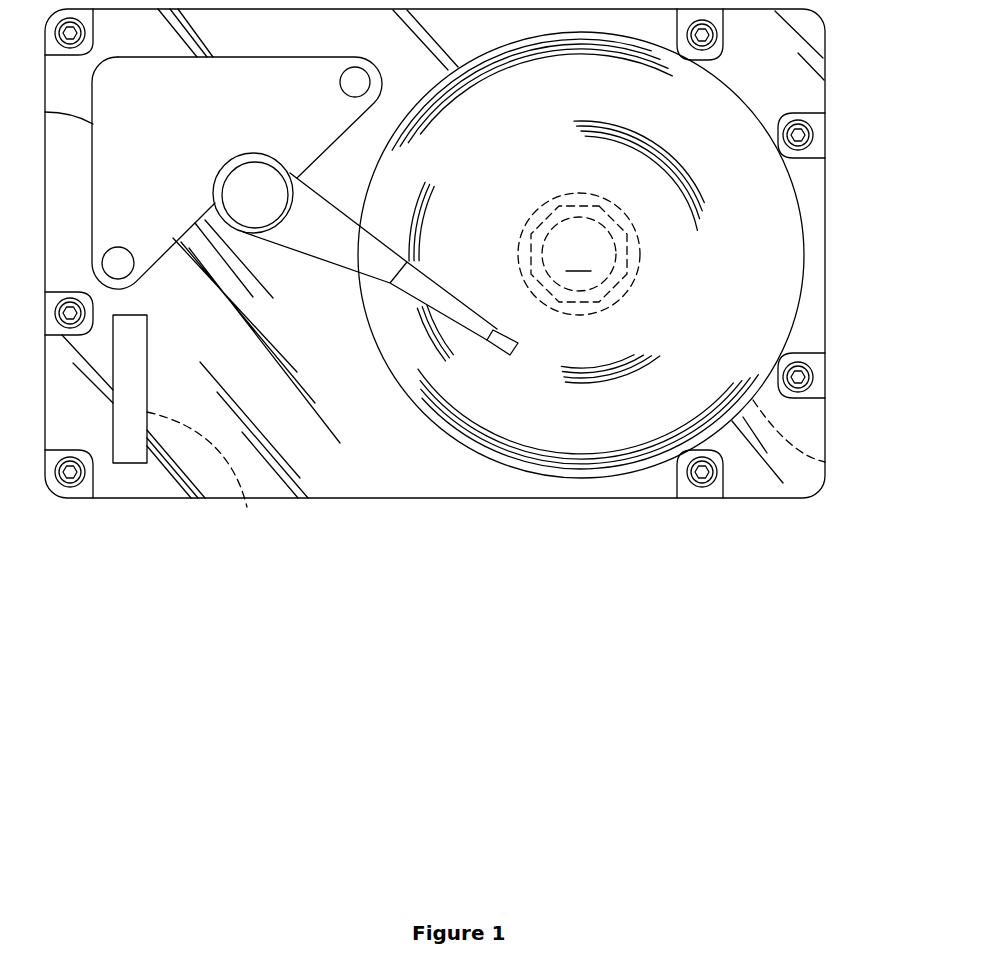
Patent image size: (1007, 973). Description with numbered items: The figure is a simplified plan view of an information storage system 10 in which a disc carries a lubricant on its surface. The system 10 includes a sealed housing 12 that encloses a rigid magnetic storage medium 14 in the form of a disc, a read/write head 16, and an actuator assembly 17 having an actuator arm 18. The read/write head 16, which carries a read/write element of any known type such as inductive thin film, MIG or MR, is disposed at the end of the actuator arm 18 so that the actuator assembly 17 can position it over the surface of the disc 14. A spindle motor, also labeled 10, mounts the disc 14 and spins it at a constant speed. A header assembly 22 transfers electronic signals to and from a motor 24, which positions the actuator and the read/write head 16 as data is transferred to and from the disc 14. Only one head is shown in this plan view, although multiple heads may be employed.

The information storage system 10 is at (471, 366).
The sealed housing 12 is at (825, 190).
The rigid magnetic storage medium 14 is at (867, 467).
The read/write head 16 is at (503, 346).
The actuator assembly 17 is at (447, 218).
The actuator arm 18 is at (427, 277).
The header assembly 22 is at (240, 485).
The motor 24 is at (183, 152).